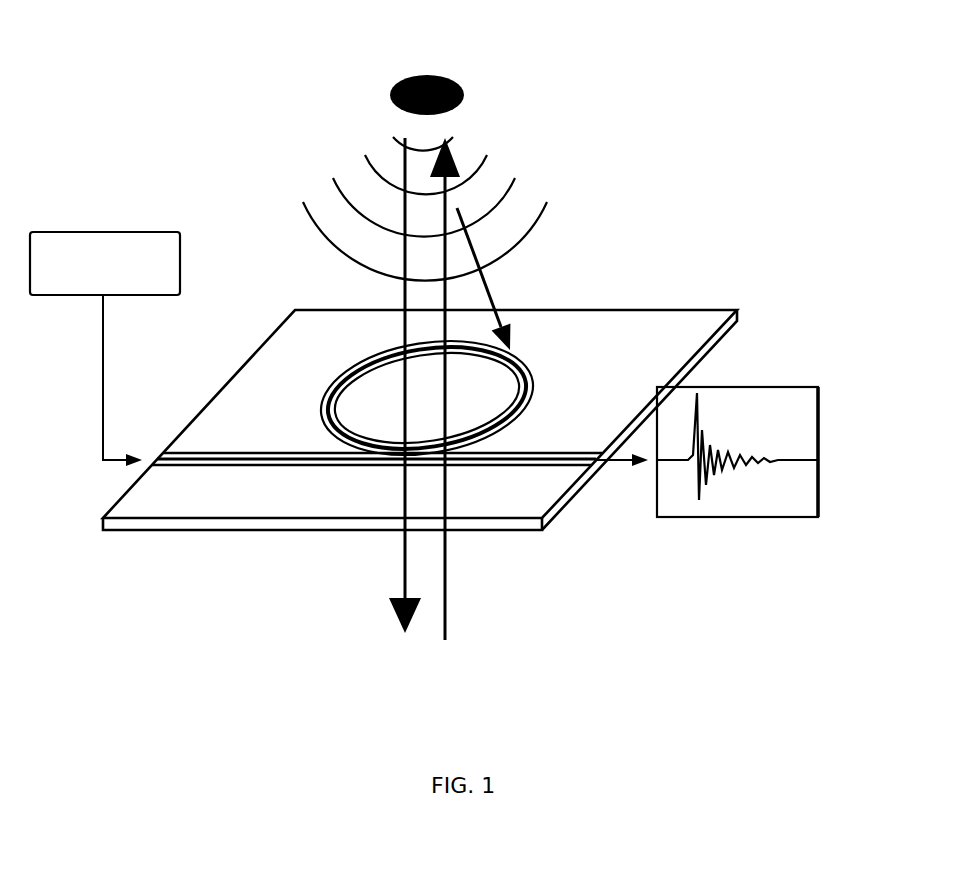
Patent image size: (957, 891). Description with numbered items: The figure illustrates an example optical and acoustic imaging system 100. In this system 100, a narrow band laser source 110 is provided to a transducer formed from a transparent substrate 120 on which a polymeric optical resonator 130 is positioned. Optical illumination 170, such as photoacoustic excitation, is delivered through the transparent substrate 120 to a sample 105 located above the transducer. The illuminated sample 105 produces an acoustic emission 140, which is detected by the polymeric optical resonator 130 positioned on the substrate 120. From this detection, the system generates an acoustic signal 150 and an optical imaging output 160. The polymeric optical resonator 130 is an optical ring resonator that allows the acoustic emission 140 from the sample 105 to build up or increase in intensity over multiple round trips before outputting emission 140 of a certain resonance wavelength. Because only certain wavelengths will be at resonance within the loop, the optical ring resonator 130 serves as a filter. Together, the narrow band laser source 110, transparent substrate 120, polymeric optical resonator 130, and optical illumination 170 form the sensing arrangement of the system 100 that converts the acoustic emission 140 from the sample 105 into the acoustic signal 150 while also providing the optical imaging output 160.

The optical and acoustic imaging system 100 is at (87, 69).
The sample 105 is at (440, 74).
The narrow band laser source 110 is at (72, 235).
The transparent substrate 120 is at (736, 310).
The polymeric optical resonator 130 is at (343, 377).
The acoustic emission 140 is at (547, 247).
The acoustic signal 150 is at (752, 383).
The optical imaging output 160 is at (393, 630).
The optical illumination 170 is at (445, 640).